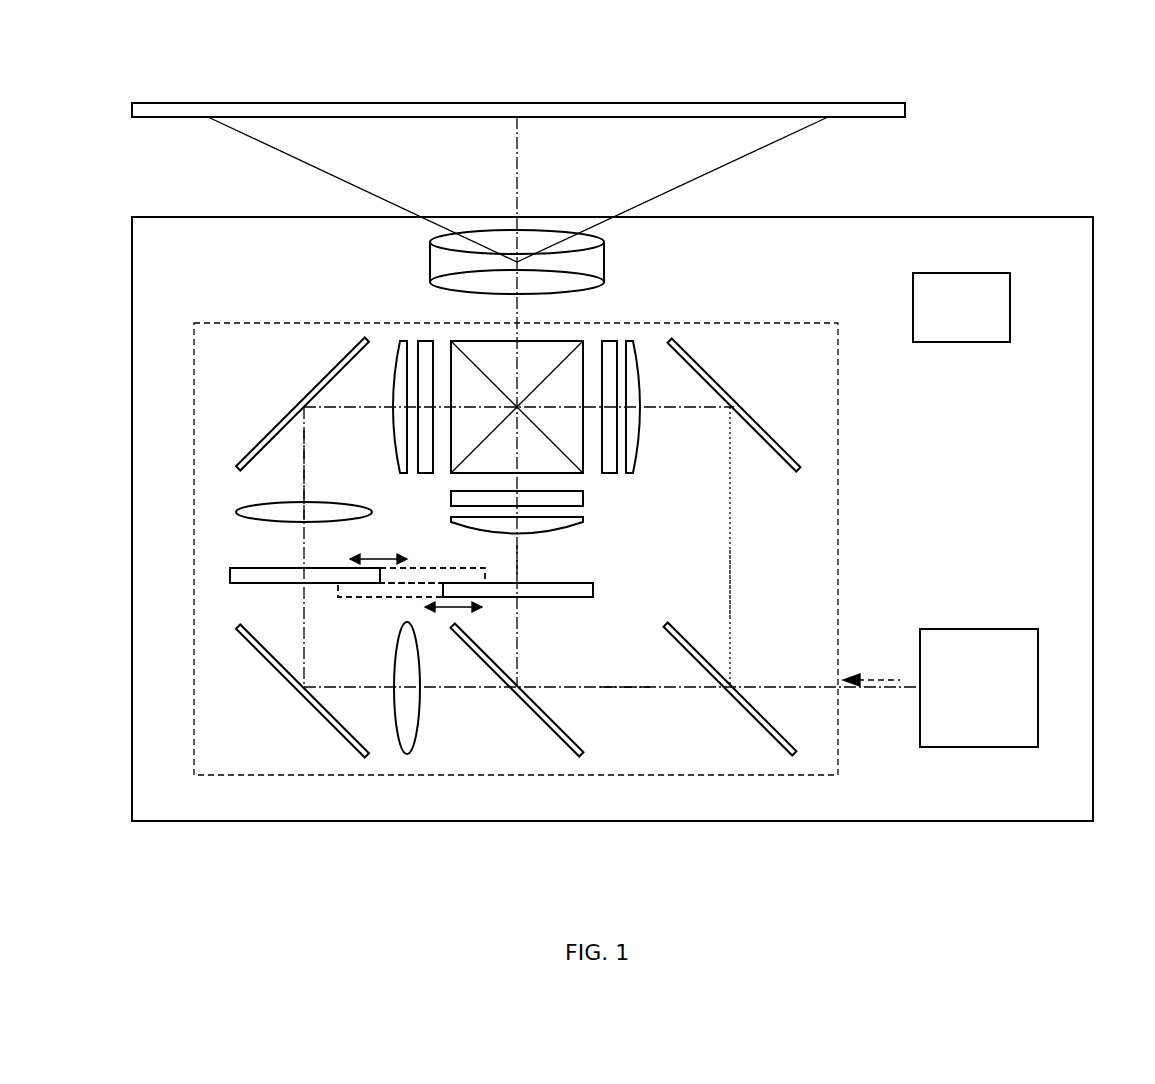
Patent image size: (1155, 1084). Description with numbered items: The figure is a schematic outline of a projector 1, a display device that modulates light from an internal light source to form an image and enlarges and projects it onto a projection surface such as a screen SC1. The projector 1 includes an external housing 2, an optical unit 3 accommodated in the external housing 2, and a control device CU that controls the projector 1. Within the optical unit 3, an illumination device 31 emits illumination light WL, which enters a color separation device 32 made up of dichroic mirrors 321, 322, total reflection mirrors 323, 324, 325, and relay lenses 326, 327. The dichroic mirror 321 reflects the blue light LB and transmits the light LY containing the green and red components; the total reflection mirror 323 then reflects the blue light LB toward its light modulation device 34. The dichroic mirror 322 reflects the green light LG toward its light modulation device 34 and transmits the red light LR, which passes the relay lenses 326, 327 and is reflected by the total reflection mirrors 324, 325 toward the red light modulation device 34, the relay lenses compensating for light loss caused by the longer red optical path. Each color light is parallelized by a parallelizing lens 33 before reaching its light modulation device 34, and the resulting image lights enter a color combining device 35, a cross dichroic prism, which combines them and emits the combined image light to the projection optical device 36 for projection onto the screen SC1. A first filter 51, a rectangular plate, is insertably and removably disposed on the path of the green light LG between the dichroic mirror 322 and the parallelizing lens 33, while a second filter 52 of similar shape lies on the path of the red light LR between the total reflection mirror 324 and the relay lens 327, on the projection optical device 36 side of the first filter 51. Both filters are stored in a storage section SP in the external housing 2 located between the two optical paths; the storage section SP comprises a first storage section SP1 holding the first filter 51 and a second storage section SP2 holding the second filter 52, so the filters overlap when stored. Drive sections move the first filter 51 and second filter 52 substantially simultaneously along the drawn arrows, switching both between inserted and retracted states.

The projector 1 is at (1080, 190).
The external housing 2 is at (1093, 463).
The optical unit 3 is at (755, 800).
The illumination device 31 is at (979, 628).
The color separation device 32 is at (517, 776).
The dichroic mirror 321 is at (748, 718).
The dichroic mirror 322 is at (533, 718).
The total reflection mirror 323 is at (762, 426).
The total reflection mirror 324 is at (322, 720).
The total reflection mirror 325 is at (282, 422).
The relay lens 326 is at (424, 742).
The relay lens 327 is at (276, 502).
The parallelizing lens 33 is at (400, 341).
The light modulation device 34 is at (425, 341).
The color combining device 35 is at (540, 352).
The projection optical device 36 is at (607, 262).
The first filter 51 is at (593, 592).
The second filter 52 is at (230, 573).
The screen SC1 is at (868, 110).
The control device CU is at (1010, 304).
The illumination light WL is at (873, 679).
The red light LR is at (303, 549).
The green light LG is at (517, 560).
The blue light LB is at (731, 585).
The light containing the other color lights LY is at (580, 686).
The storage section SP is at (345, 610).
The first storage section SP1 is at (425, 592).
The second storage section SP2 is at (432, 585).